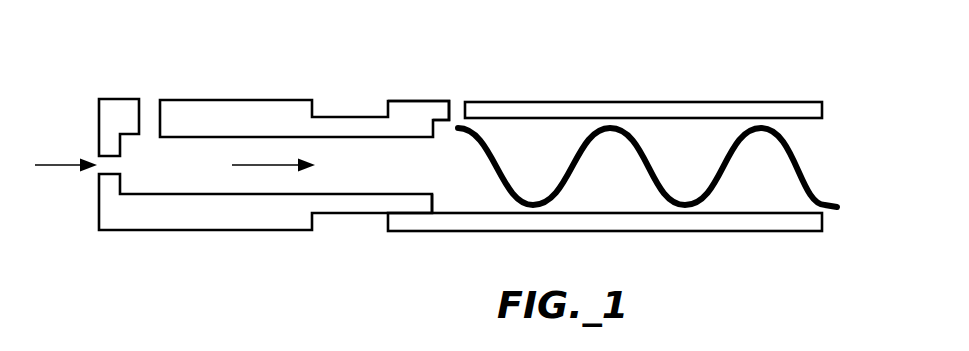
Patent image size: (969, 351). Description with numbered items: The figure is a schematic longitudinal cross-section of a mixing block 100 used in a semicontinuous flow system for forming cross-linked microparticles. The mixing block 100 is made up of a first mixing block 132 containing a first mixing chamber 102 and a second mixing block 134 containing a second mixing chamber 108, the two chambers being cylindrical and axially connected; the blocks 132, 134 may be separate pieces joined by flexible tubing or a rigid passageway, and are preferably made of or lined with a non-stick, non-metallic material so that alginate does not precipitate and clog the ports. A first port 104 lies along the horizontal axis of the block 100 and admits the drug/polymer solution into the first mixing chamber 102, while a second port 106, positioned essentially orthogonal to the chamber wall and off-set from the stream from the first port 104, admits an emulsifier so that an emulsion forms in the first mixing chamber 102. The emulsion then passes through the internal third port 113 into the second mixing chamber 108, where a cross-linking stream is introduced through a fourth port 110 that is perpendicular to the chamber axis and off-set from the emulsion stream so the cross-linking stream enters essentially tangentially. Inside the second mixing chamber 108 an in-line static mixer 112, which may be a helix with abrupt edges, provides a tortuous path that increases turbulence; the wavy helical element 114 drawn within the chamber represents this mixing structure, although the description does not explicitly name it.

The mixing block 100 is at (285, 70).
The first mixing chamber 102 is at (176, 184).
The first port 104 is at (74, 164).
The second port 106 is at (147, 82).
The second mixing chamber 108 is at (703, 167).
The fourth port 110 is at (455, 82).
The in-line static mixer 112 is at (710, 202).
The internal third port 113 is at (441, 190).
The corrugated product 114 is at (826, 169).
The first mixing block 132 is at (230, 240).
The second mixing block 134 is at (834, 92).